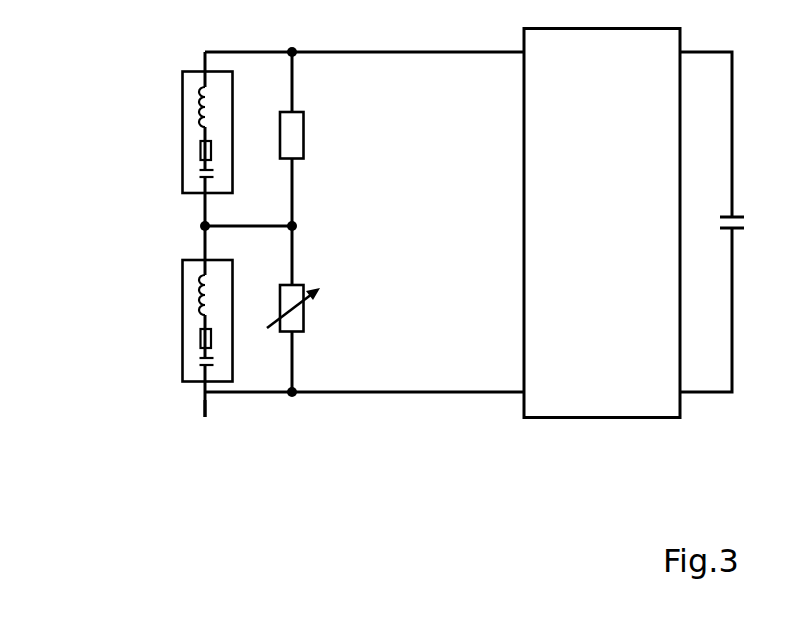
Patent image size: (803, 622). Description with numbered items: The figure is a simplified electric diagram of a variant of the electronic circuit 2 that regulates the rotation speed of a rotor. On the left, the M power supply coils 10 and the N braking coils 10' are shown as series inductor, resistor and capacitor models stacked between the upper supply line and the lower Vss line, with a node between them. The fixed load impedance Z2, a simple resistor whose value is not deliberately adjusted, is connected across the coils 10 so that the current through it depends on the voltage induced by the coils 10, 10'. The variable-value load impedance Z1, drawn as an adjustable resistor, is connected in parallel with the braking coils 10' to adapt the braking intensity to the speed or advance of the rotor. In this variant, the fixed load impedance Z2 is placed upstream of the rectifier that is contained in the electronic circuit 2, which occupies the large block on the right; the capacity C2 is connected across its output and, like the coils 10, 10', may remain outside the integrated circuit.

The power supply coils 10 is at (160, 133).
The braking coils 10' is at (158, 321).
The fixed load impedance Z2 is at (304, 149).
The variable-value load impedance Z1 is at (304, 321).
The electronic circuit 2 is at (655, 418).
The capacity C2 is at (730, 222).
The supply voltage terminal Vss is at (199, 425).